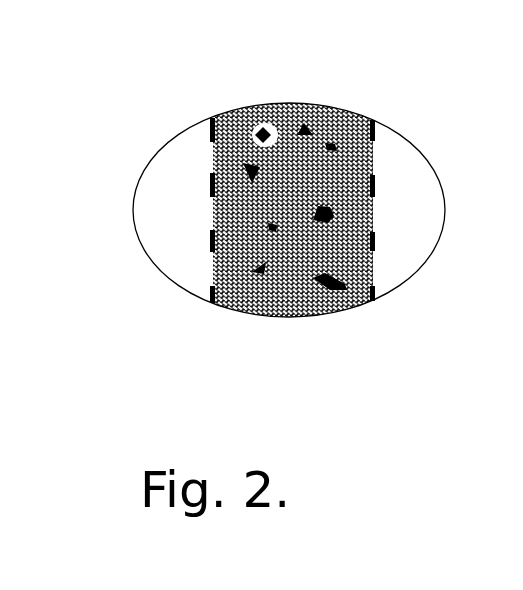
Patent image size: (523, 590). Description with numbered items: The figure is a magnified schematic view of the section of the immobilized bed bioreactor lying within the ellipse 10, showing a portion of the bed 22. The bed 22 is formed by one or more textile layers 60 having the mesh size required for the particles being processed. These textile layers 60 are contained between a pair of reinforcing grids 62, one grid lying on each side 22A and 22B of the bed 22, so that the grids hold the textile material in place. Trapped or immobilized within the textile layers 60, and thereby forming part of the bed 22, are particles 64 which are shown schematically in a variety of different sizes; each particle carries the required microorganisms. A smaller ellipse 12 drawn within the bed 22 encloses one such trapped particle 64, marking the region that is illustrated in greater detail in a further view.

The ellipse 10 is at (150, 162).
The ellipse 12 is at (243, 118).
The bed 22 is at (325, 108).
The side of the bed 22A is at (213, 212).
The side of the bed 22B is at (368, 160).
The textile layers 60 is at (312, 250).
The reinforcing grids 62 is at (372, 185).
The particles 64 is at (326, 143).